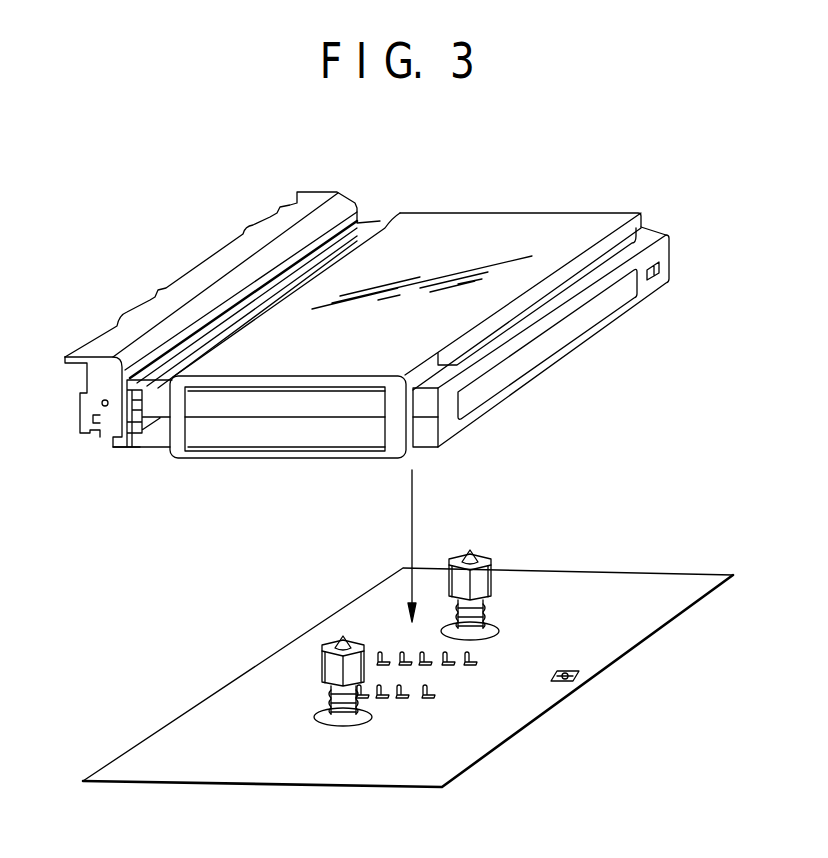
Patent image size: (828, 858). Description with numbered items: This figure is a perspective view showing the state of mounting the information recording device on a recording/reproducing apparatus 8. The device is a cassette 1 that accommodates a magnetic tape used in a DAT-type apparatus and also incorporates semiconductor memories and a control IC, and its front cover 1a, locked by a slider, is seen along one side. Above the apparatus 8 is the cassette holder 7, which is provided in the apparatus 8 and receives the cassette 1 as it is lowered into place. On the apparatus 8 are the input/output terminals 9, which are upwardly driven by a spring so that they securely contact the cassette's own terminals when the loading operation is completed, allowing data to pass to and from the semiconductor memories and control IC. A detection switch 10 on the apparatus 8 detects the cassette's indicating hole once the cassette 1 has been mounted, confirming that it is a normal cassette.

The cassette 1 is at (590, 199).
The front cover 1a is at (223, 255).
The cassette holder 7 is at (456, 236).
The recording/reproducing apparatus 8 is at (567, 585).
The input/output terminals 9 is at (433, 687).
The detection switch 10 is at (566, 665).